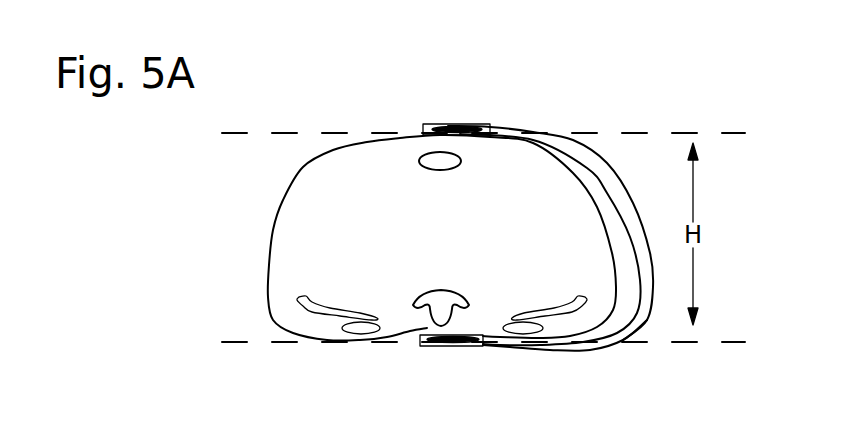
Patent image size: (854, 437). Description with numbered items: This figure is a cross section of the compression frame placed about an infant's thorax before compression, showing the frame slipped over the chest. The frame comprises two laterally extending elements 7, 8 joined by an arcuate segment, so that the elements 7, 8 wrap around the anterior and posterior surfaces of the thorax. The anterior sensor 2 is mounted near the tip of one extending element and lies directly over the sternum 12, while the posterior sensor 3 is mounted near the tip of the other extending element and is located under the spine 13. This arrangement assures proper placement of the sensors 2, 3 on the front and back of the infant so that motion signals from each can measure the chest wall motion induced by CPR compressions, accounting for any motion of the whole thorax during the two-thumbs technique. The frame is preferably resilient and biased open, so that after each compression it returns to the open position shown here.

The anterior sensor 2 is at (456, 125).
The posterior sensor 3 is at (458, 345).
The laterally extending element 7 is at (535, 130).
The laterally extending element 8 is at (560, 351).
The sternum 12 is at (440, 156).
The spine 13 is at (441, 283).